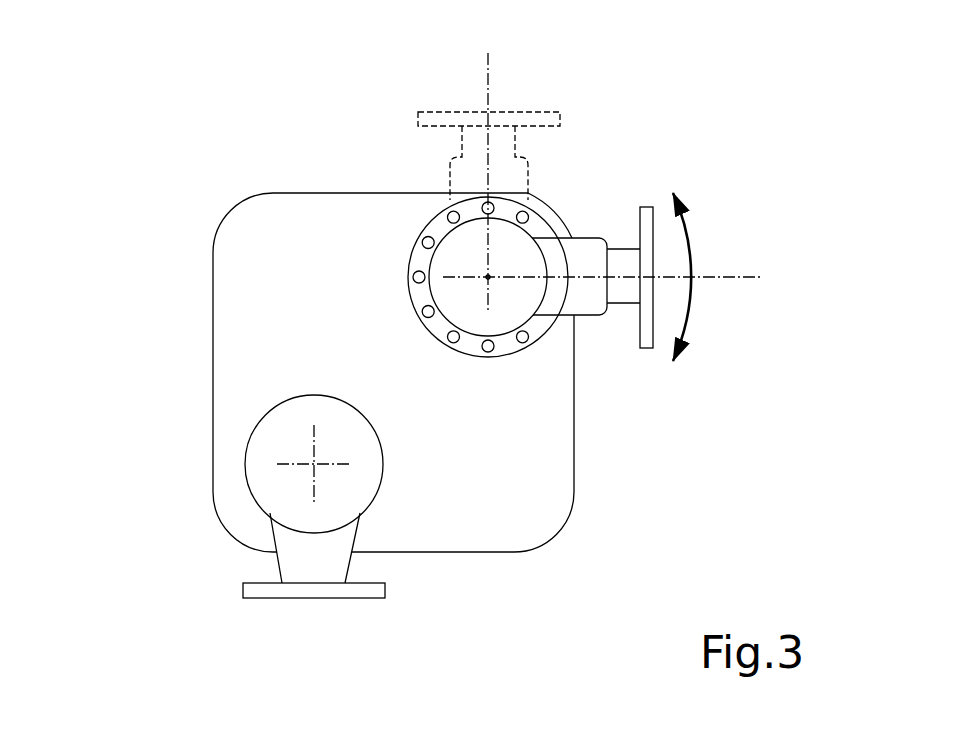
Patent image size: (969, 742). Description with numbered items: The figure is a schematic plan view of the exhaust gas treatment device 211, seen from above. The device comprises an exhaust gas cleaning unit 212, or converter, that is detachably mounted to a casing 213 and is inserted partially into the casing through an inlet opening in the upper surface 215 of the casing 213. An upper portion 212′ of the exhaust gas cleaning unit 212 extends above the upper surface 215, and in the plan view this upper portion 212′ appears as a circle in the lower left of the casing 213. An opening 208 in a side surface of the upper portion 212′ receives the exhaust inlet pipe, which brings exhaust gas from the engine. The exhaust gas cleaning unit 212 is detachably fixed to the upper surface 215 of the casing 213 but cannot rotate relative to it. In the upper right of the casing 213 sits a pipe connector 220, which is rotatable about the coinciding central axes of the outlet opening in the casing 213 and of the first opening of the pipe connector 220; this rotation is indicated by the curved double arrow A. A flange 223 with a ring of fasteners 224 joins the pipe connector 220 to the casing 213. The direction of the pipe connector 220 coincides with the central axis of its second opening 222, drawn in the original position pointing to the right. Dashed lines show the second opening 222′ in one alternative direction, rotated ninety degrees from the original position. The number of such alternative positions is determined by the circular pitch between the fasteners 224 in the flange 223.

The opening 208 is at (340, 603).
The exhaust gas treatment device 211 is at (203, 183).
The exhaust gas cleaning unit 212 is at (232, 477).
The upper portion of the exhaust gas cleaning unit 212′ is at (255, 425).
The casing 213 is at (200, 283).
The upper surface of the casing 215 is at (512, 491).
The pipe connector 220 is at (565, 195).
The second opening 222 is at (666, 302).
The second opening in alternative position 222′ is at (536, 98).
The flange 223 is at (440, 217).
The fasteners 224 is at (412, 272).